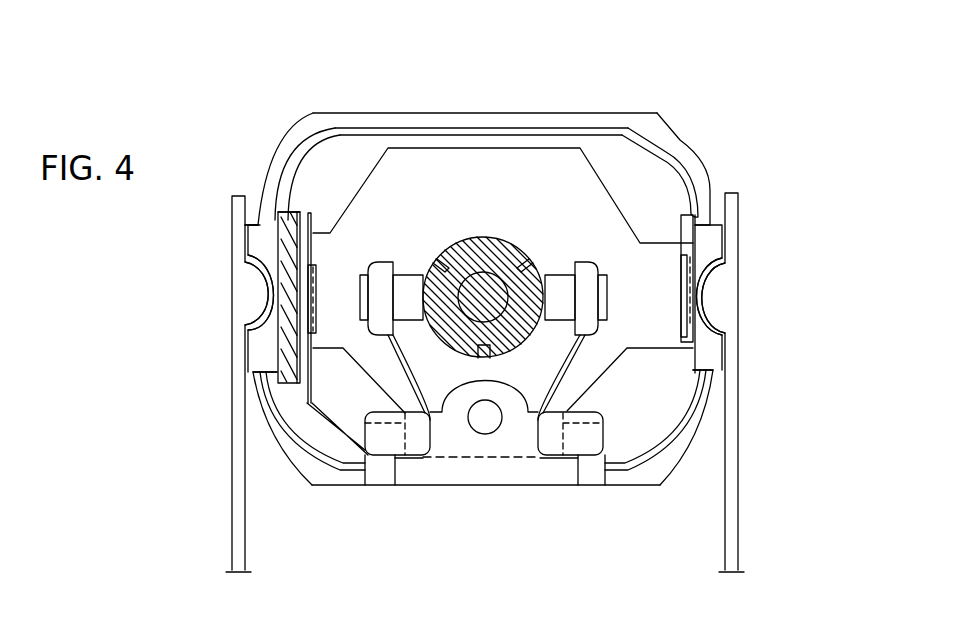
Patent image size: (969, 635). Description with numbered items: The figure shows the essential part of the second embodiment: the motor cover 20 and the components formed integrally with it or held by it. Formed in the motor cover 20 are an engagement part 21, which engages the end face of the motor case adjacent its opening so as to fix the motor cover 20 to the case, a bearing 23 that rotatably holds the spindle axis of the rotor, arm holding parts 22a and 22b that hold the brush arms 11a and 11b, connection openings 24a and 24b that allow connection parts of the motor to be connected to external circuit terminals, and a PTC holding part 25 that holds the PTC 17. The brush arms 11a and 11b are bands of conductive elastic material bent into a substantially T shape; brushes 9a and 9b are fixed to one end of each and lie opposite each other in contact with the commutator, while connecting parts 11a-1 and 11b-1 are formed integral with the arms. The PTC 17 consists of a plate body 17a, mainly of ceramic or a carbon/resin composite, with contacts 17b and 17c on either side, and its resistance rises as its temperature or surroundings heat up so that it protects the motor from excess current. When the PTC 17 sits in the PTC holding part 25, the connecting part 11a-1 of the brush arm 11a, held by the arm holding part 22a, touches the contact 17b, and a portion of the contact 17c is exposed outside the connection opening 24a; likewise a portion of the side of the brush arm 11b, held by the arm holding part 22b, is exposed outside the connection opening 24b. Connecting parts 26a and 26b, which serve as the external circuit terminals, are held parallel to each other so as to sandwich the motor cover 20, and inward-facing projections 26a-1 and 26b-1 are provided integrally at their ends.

The motor cover 20 is at (474, 105).
The engagement part 21 is at (681, 138).
The PTC thermistor 17 is at (293, 347).
The plate body 17a is at (288, 218).
The contact 17b is at (314, 221).
The contact 17c is at (260, 222).
The connection opening 24a is at (253, 238).
The connection opening 24b is at (720, 228).
The connecting part 11a-1 is at (267, 280).
The connecting part 11b-1 is at (712, 313).
The connecting part 26a is at (233, 508).
The connecting part 26b is at (735, 502).
The projection 26a-1 is at (263, 303).
The projection 26b-1 is at (712, 270).
The brush 9a is at (407, 283).
The brush 9b is at (560, 283).
The bearing 23 is at (487, 283).
The arm holding part 22a is at (397, 463).
The arm holding part 22b is at (582, 463).
The PTC holding part 25 is at (275, 380).
The brush arm 11a is at (327, 430).
The brush arm 11b is at (648, 430).